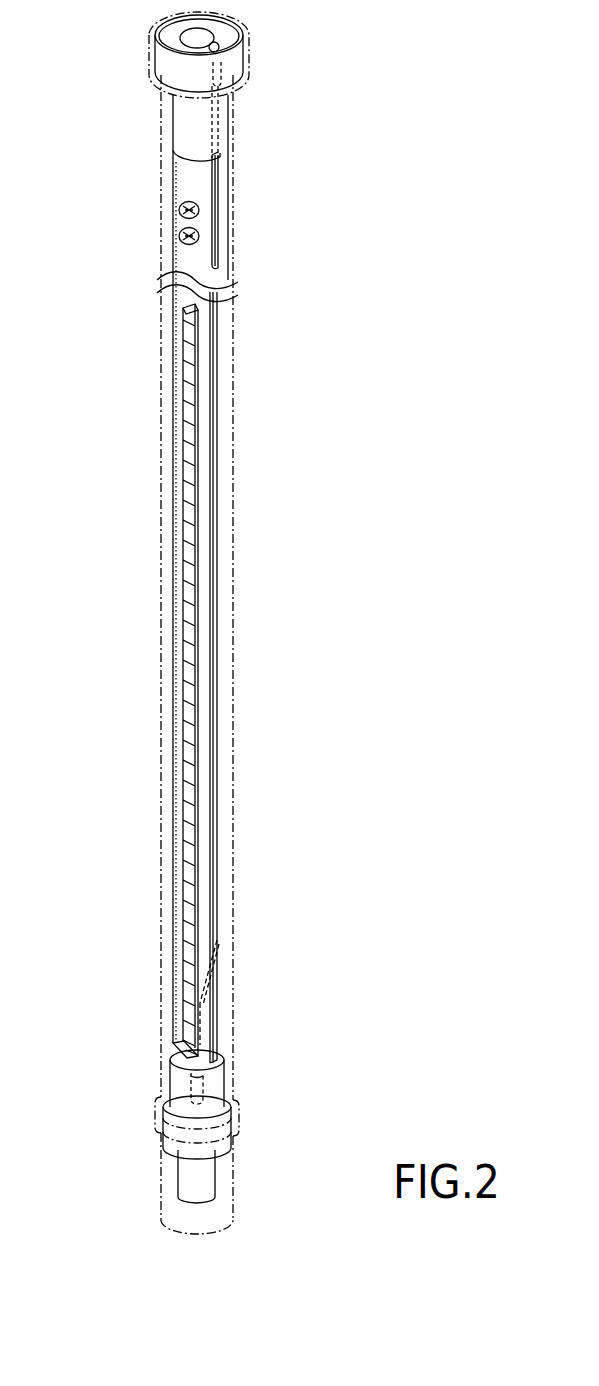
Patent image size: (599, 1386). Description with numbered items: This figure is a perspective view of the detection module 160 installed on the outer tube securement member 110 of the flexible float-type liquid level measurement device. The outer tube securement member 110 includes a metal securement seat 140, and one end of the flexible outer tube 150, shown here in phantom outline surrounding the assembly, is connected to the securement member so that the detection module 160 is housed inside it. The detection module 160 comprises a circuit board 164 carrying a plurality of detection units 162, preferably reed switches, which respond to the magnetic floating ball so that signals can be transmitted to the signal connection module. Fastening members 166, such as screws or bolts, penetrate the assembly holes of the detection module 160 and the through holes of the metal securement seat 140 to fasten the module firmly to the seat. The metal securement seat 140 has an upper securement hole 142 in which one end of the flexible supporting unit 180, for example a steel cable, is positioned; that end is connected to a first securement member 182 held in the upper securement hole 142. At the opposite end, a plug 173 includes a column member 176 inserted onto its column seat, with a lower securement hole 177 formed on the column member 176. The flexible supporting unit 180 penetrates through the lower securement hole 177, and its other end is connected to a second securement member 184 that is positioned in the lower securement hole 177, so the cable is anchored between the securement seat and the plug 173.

The outer tube securement member 110 is at (164, 116).
The metal securement seat 140 is at (228, 141).
The upper securement hole 142 is at (215, 43).
The flexible outer tube 150 is at (229, 432).
The detection module 160 is at (93, 540).
The detection unit 162 is at (187, 523).
The circuit board 164 is at (176, 580).
The fastening member 166 is at (185, 211).
The plug 173 is at (161, 1128).
The column member 176 is at (222, 1138).
The lower securement hole 177 is at (180, 1052).
The flexible supporting unit 180 is at (207, 977).
The first securement member 182 is at (222, 76).
The second securement member 184 is at (205, 1086).